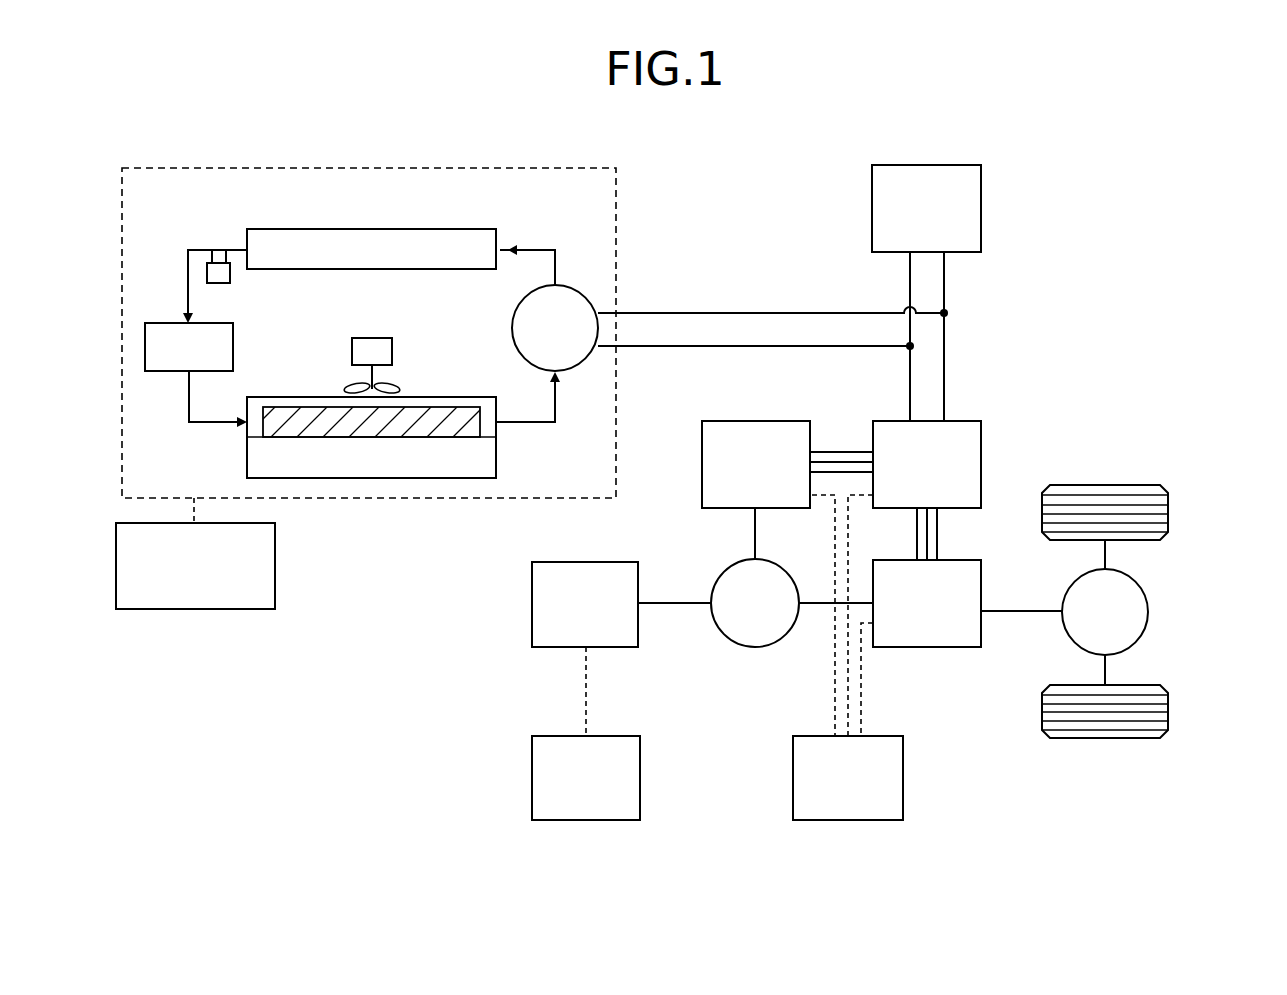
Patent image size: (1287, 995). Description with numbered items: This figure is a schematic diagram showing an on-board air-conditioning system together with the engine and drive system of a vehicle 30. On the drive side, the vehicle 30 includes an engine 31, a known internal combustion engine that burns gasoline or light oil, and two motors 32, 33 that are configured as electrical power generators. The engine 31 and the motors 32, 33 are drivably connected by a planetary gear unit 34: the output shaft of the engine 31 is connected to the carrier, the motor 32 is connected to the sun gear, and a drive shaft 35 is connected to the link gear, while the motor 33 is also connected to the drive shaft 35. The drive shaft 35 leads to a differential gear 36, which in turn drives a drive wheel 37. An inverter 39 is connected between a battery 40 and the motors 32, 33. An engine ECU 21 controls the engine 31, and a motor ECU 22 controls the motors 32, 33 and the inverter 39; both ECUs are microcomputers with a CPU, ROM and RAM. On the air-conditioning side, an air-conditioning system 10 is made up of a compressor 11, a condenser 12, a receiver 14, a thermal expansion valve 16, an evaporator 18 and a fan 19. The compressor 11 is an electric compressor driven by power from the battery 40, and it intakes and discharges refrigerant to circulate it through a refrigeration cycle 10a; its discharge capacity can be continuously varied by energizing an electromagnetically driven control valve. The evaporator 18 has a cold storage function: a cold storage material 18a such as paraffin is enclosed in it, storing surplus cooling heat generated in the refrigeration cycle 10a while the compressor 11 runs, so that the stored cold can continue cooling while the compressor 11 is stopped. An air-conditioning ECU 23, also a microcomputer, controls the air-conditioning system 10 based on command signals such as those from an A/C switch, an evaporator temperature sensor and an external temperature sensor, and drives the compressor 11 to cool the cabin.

The air-conditioning system 10 is at (569, 153).
The refrigeration cycle 10a is at (529, 249).
The compressor 11 is at (581, 293).
The condenser 12 is at (442, 229).
The receiver 14 is at (230, 275).
The thermal expansion valve 16 is at (233, 347).
The evaporator 18 is at (496, 455).
The cold storage material 18a is at (452, 419).
The fan 19 is at (372, 338).
The engine ECU 21 is at (624, 736).
The motor ECU 22 is at (886, 736).
The air-conditioning ECU 23 is at (230, 609).
The vehicle 30 is at (946, 693).
The engine 31 is at (624, 561).
The motor 32 is at (794, 421).
The motor 33 is at (965, 561).
The planetary gear unit 34 is at (788, 563).
The drive shaft 35 is at (1022, 610).
The differential gear 36 is at (1148, 612).
The drive wheel 37 is at (1168, 505).
The inverter 39 is at (965, 421).
The battery 40 is at (965, 164).